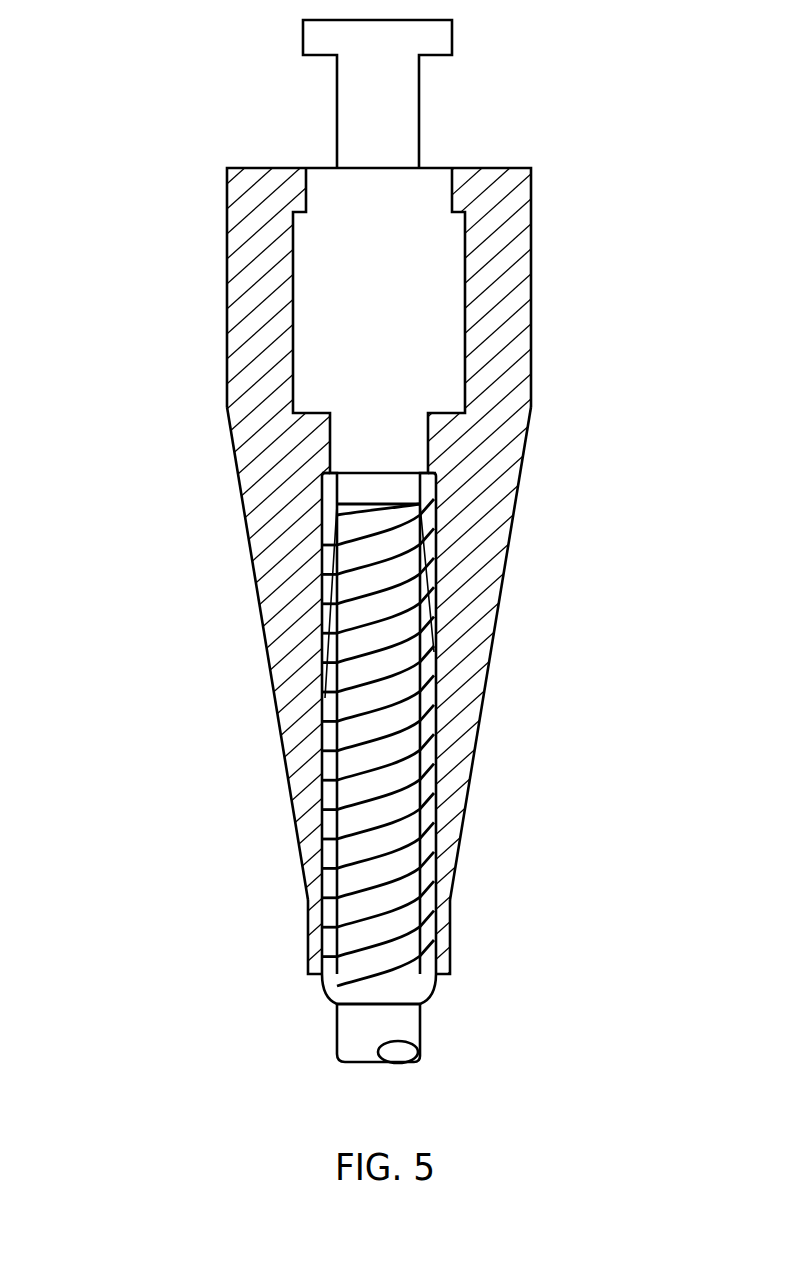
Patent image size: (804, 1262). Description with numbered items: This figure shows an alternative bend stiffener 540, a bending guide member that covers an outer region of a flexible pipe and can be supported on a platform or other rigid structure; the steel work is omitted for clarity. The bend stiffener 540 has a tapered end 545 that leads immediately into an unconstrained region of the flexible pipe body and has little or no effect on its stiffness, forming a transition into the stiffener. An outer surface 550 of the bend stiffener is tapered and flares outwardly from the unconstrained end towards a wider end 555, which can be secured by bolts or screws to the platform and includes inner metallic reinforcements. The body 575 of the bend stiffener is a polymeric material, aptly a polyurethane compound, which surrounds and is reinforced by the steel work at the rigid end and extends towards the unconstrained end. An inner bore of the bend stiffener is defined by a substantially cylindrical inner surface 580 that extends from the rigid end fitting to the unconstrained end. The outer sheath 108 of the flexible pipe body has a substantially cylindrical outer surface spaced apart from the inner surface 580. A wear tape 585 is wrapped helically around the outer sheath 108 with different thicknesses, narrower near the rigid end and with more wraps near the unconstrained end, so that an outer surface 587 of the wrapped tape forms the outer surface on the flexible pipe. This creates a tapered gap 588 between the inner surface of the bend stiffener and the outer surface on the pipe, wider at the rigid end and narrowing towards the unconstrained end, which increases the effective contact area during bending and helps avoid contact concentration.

The wider end 555 is at (148, 207).
The bend stiffener 540 is at (540, 746).
The tapered end 545 is at (502, 950).
The body 575 is at (488, 603).
The outer surface 550 is at (283, 753).
The tapered gap 588 is at (430, 538).
The outer surface 587 is at (357, 698).
The inner surface 580 is at (338, 500).
The wear tape 585 is at (363, 972).
The outer sheath 108 is at (407, 1023).